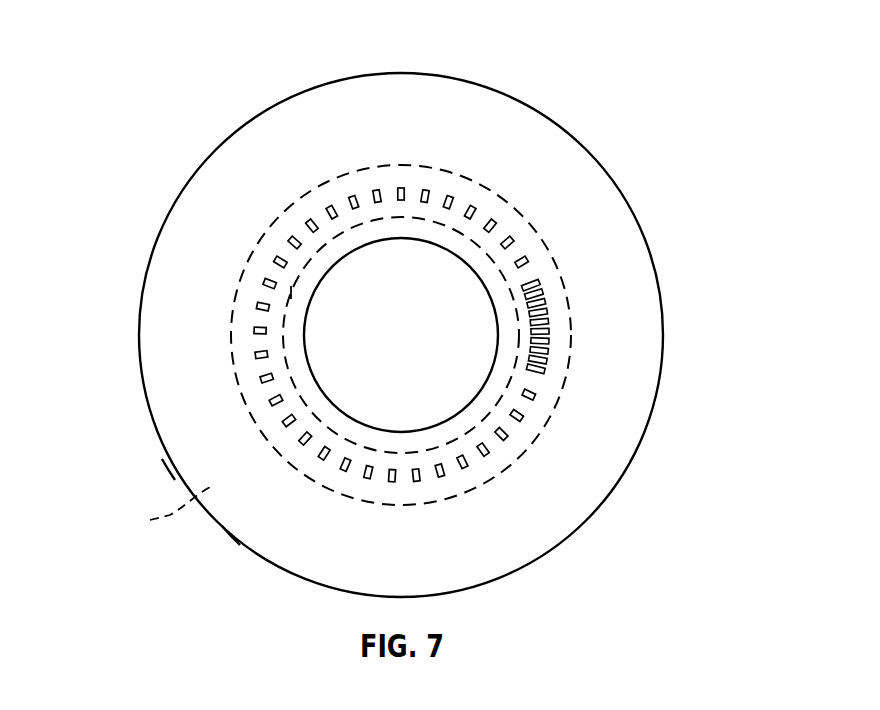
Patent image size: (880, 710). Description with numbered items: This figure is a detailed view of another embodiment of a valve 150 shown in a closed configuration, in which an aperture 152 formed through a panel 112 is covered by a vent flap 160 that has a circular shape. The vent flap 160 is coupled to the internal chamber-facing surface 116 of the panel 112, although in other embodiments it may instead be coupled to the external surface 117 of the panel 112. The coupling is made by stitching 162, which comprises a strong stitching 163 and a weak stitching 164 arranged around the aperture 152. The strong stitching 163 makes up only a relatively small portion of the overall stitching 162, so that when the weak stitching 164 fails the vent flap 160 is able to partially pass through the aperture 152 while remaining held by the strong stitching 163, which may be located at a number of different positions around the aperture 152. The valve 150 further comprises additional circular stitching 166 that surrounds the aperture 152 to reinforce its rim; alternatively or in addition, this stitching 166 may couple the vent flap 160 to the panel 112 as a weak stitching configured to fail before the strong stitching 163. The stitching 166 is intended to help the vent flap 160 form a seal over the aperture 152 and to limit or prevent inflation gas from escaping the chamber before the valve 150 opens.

The valve 150 is at (379, 127).
The aperture 152 is at (349, 288).
The vent flap 160 is at (568, 332).
The stitching 162 is at (523, 398).
The strong stitching 163 is at (548, 310).
The weak stitching 164 is at (505, 437).
The circular stitching 166 is at (290, 293).
The panel 112 is at (183, 458).
The internal chamber-facing surface 116 is at (155, 510).
The external surface 117 is at (240, 532).